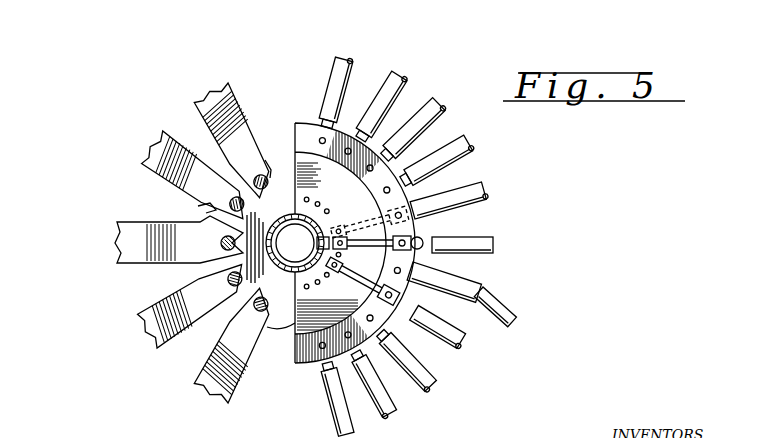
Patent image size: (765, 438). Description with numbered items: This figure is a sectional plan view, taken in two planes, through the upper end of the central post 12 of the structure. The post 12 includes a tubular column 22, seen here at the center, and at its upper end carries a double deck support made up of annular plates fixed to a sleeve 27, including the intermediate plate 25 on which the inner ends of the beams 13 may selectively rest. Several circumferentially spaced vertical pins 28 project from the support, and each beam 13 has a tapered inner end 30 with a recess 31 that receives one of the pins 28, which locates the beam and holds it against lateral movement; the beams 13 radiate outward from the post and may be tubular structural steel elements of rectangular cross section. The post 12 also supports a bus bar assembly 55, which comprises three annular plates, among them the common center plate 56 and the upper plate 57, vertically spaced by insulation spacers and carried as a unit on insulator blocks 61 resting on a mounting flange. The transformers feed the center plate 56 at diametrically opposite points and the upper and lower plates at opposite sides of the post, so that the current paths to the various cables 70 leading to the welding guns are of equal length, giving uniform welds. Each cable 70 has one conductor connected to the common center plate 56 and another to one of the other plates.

The post 12 is at (270, 329).
The beams 13 is at (204, 119).
The tubular column 22 is at (289, 263).
The intermediate plate 25 is at (294, 294).
The sleeve 27 is at (292, 219).
The vertical pins 28 is at (215, 208).
The tapered inner end 30 is at (270, 168).
The recess 31 is at (268, 188).
The bus bar assembly 55 is at (309, 106).
The center plate 56 is at (413, 222).
The upper plate 57 is at (415, 298).
The insulator blocks 61 is at (343, 229).
The cables 70 is at (428, 100).